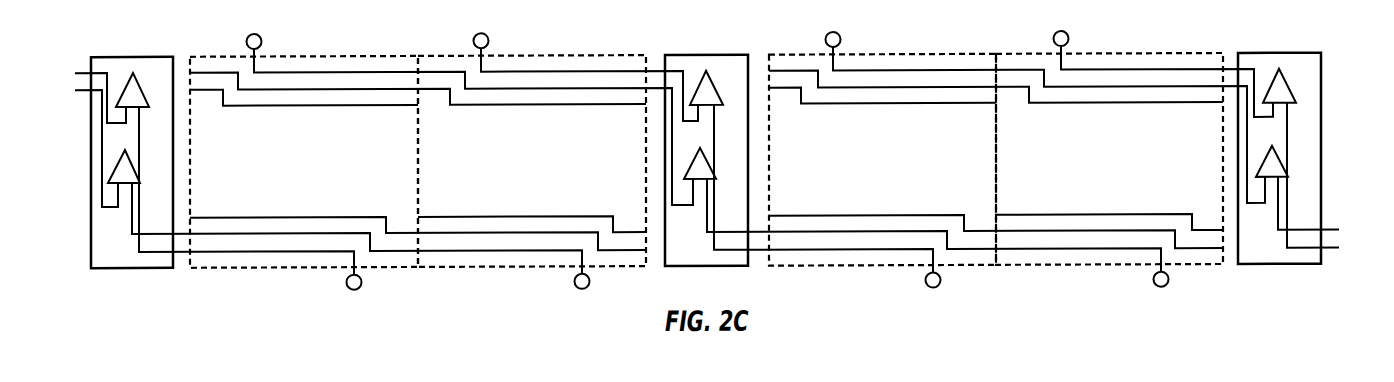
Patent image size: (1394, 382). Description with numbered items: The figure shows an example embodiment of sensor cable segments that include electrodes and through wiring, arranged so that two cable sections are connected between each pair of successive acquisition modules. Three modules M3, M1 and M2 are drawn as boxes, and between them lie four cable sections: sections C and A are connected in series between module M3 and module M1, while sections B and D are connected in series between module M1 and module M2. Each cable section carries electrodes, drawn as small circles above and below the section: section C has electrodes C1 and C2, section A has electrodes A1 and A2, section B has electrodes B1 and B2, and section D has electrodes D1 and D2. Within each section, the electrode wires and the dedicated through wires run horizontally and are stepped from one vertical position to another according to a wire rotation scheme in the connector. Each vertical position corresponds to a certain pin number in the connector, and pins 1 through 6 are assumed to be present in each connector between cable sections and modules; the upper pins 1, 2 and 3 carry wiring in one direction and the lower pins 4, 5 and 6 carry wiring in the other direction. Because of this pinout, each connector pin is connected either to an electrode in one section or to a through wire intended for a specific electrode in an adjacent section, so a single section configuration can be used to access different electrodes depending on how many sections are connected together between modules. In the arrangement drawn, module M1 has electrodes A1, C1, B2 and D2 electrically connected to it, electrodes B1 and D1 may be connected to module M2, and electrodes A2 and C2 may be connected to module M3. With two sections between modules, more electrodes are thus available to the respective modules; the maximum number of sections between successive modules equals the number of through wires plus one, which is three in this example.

The connector pin 1 is at (593, 58).
The connector pin 2 is at (476, 88).
The connector pin 3 is at (706, 94).
The connector pin 4 is at (820, 210).
The connector pin 5 is at (706, 232).
The connector pin 6 is at (593, 249).
The module M1 is at (706, 140).
The module M2 is at (1288, 140).
The module M3 is at (124, 144).
The cable section A is at (532, 161).
The cable section B is at (882, 160).
The cable section C is at (304, 162).
The cable section D is at (1109, 159).
The electrode A1 is at (581, 61).
The electrode A2 is at (364, 253).
The electrode B1 is at (1042, 102).
The electrode B2 is at (830, 213).
The electrode C1 is at (467, 104).
The electrode C2 is at (255, 215).
The electrode D1 is at (1159, 59).
The electrode D2 is at (941, 250).